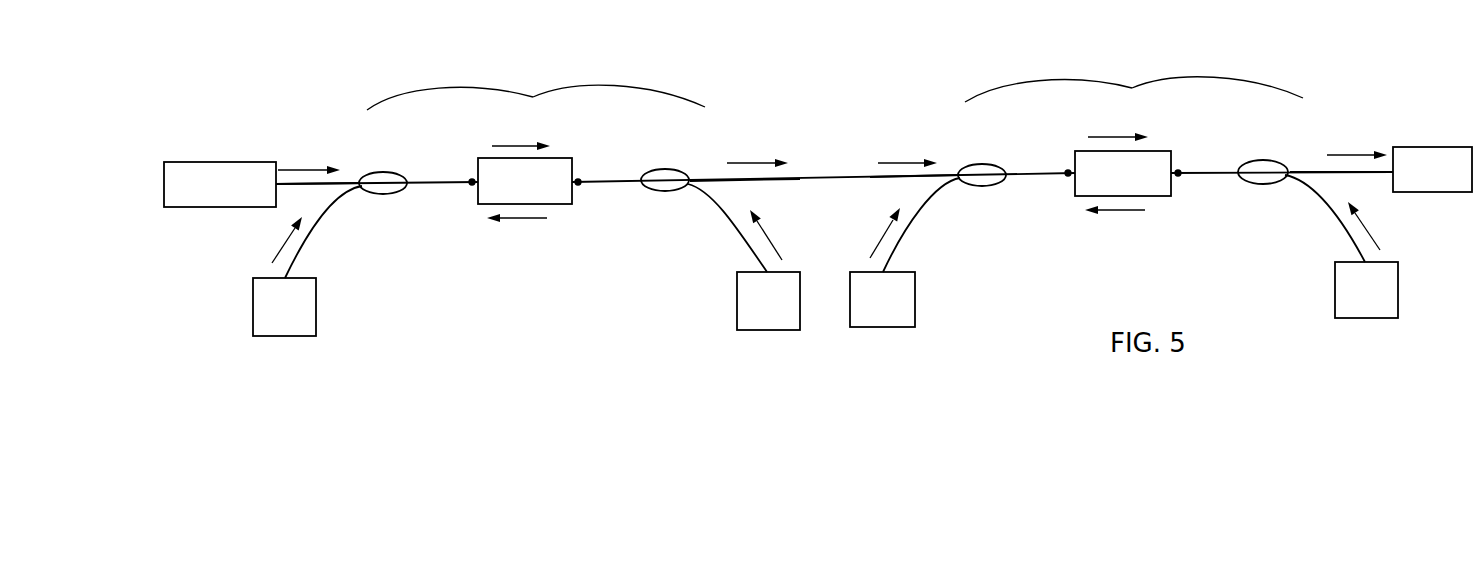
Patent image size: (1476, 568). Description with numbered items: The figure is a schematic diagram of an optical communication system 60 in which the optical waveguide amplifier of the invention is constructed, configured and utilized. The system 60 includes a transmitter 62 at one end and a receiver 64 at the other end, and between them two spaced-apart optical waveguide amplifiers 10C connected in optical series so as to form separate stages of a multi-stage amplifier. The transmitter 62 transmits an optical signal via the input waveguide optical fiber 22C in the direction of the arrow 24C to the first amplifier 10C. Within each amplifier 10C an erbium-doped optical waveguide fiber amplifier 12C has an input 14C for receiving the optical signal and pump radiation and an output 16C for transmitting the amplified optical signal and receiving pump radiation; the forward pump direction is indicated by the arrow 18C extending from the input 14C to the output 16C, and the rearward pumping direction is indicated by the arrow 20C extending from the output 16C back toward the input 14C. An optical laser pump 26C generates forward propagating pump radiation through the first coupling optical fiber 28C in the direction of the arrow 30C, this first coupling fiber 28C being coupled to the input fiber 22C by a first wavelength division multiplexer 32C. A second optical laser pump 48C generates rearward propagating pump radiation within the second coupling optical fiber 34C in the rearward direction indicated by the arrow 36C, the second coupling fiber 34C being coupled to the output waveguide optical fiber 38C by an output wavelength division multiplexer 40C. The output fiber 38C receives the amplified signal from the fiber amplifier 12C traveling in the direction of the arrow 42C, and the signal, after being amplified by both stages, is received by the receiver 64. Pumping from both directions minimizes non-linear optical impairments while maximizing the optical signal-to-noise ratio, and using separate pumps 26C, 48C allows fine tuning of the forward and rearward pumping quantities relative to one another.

The optical communication system 60 is at (889, 77).
The transmitter 62 is at (237, 161).
The receiver 64 is at (1427, 146).
The optical waveguide amplifier 10C is at (835, 85).
The erbium-doped optical waveguide fiber amplifier 12C is at (555, 157).
The input 14C is at (471, 172).
The output 16C is at (580, 173).
The forward pump direction arrow 18C is at (510, 143).
The rearward pumping direction arrow 20C is at (527, 220).
The input waveguide optical fiber 22C is at (287, 186).
The signal direction arrow 24C is at (300, 168).
The optical laser pump 26C is at (305, 272).
The first coupling optical fiber 28C is at (337, 202).
The forward pump radiation arrow 30C is at (287, 242).
The first wavelength division multiplexer 32C is at (413, 190).
The second coupling optical fiber 34C is at (710, 195).
The rearward pump radiation arrow 36C is at (765, 233).
The output waveguide optical fiber 38C is at (762, 180).
The output wavelength division multiplexer 40C is at (640, 188).
The amplified signal direction arrow 42C is at (743, 162).
The second optical laser pump 48C is at (747, 272).